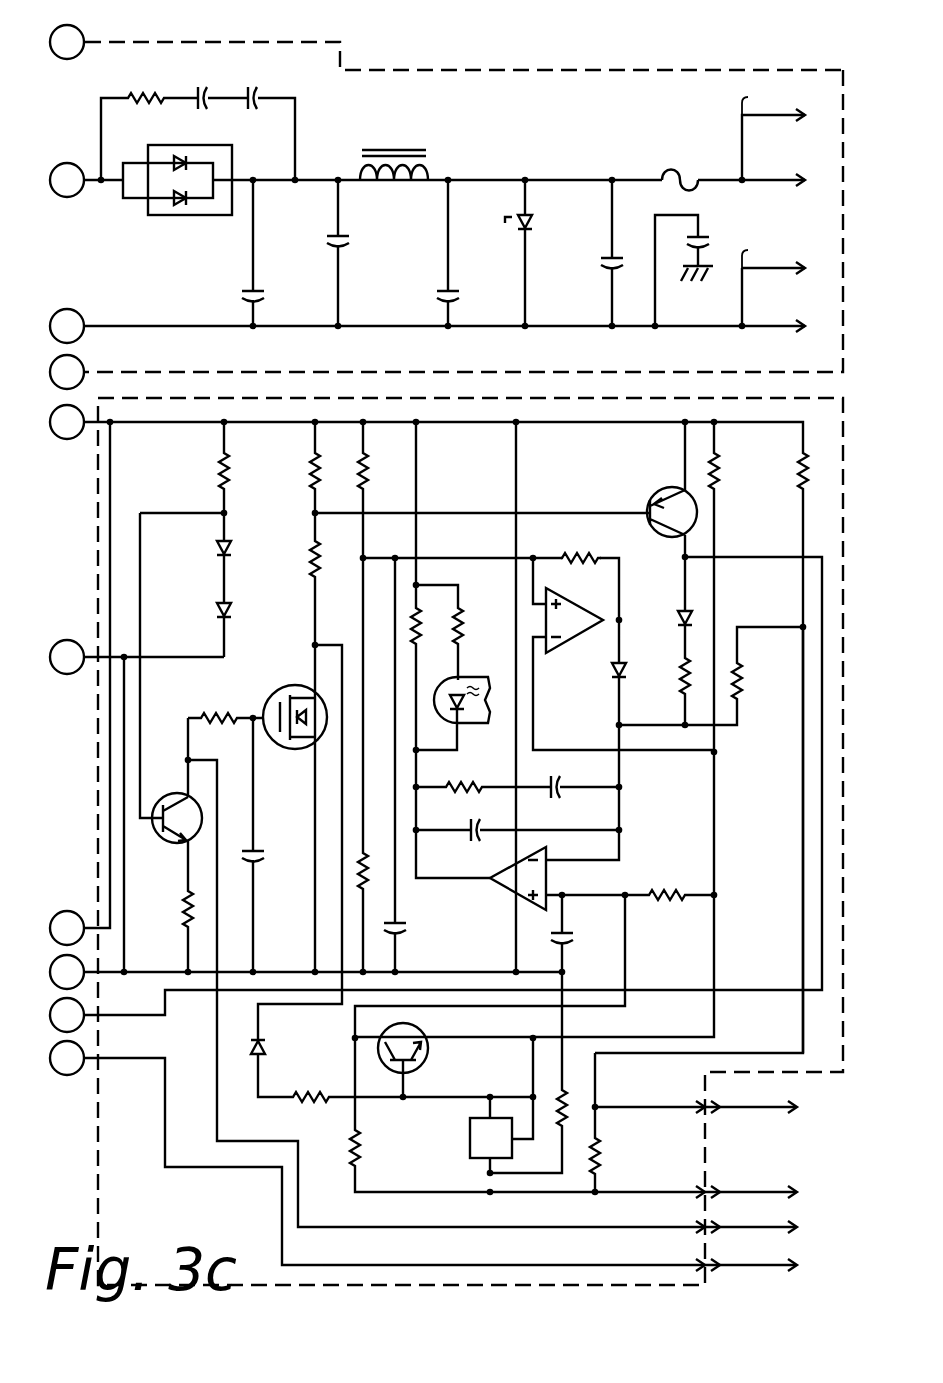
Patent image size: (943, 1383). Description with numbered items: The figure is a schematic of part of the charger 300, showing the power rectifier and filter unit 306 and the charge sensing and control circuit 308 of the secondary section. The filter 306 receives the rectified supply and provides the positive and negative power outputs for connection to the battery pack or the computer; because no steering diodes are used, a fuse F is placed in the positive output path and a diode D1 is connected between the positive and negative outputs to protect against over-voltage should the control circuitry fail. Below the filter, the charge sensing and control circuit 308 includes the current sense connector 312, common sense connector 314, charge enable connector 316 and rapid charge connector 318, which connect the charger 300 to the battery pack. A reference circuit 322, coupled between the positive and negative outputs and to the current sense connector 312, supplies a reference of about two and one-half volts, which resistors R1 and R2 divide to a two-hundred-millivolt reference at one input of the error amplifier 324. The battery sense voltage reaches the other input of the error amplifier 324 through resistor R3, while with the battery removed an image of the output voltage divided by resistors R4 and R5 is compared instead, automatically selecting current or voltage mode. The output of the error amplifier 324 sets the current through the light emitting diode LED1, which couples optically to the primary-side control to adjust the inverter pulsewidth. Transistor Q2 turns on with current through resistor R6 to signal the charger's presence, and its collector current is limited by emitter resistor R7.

The charger 300 is at (454, 200).
The power rectifier and filter unit 306 is at (157, 42).
The charge sensing and control circuit 308 is at (98, 580).
The current sense connector 312 is at (772, 1108).
The common sense connector 314 is at (778, 1191).
The charge enable connector 316 is at (776, 1226).
The rapid charge connector 318 is at (776, 1264).
The reference circuit 322 is at (469, 1158).
The error amplifier 324 is at (507, 892).
The resistor R1 is at (688, 884).
The resistor R2 is at (362, 1153).
The resistor R3 is at (746, 680).
The resistor R4 is at (800, 478).
The resistor R5 is at (603, 1162).
The resistor R6 is at (230, 460).
The emitter resistor R7 is at (183, 905).
The transistor Q2 is at (170, 848).
The diode D1 is at (532, 222).
The fuse F is at (680, 169).
The light emitting diode LED1 is at (490, 703).